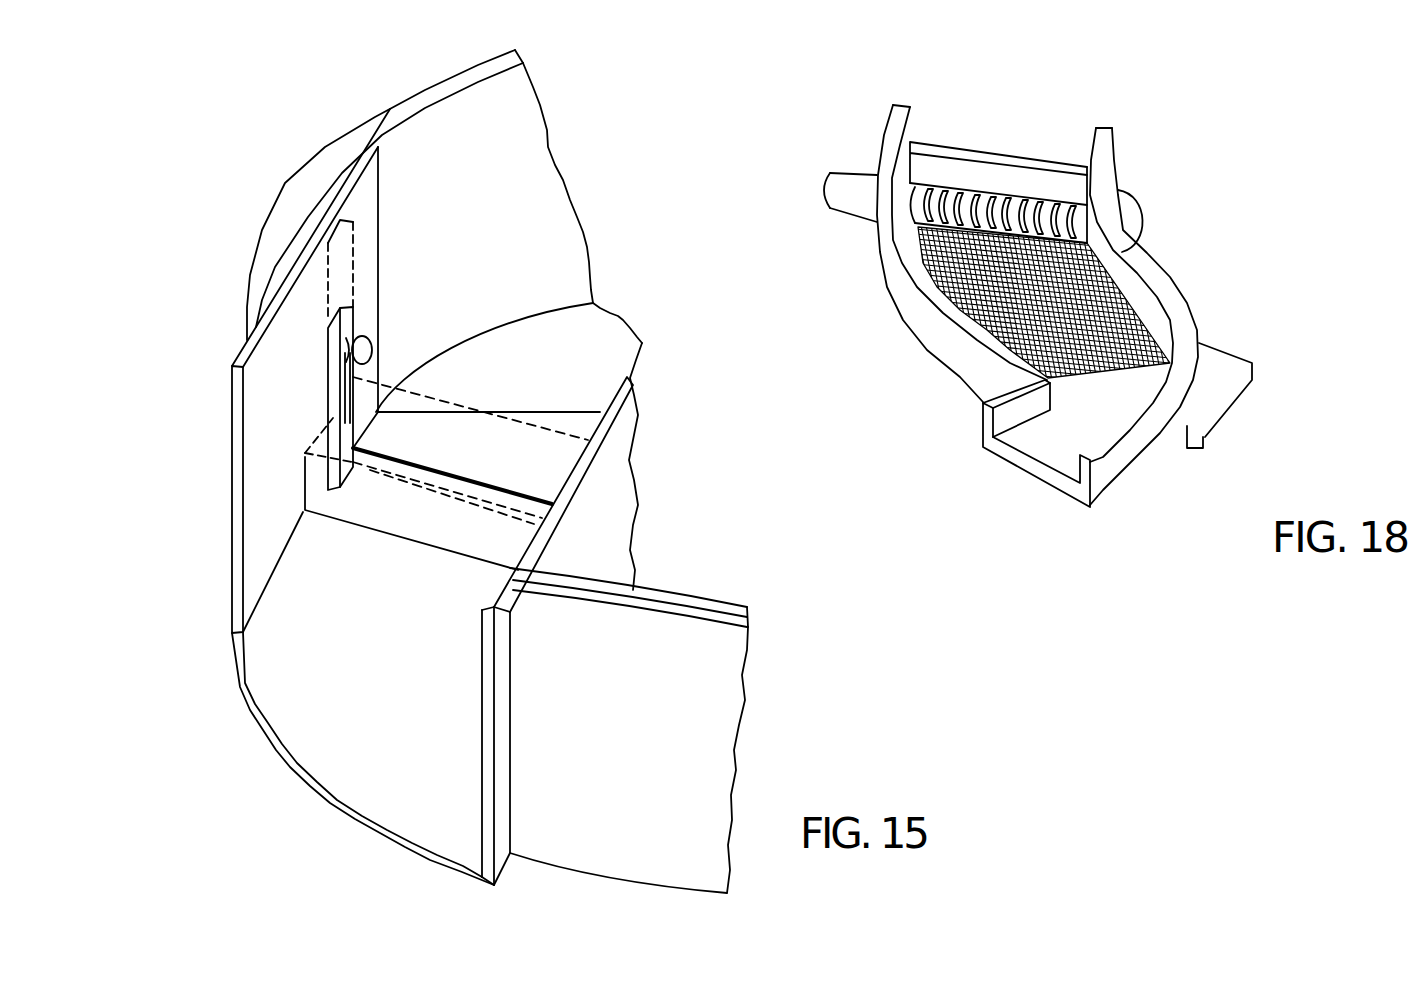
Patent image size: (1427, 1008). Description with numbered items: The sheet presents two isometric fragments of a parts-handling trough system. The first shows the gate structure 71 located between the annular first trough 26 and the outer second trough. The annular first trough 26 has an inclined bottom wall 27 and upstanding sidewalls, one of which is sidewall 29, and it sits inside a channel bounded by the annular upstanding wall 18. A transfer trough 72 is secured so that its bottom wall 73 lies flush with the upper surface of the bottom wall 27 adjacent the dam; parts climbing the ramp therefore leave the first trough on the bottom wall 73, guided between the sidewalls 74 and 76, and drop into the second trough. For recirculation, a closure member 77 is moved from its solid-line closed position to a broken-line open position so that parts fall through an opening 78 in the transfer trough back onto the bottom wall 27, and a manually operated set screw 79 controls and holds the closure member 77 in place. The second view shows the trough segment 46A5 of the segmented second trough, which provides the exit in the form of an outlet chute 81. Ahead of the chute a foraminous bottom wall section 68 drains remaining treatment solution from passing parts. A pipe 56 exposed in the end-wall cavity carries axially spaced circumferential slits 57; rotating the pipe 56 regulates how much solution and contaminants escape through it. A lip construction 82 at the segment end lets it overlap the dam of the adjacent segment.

In FIG. 15, the annular upstanding wall 18 is at (332, 148).
In FIG. 15, the sidewall 29 is at (533, 125).
In FIG. 15, the annular first trough 26 is at (557, 268).
In FIG. 15, the bottom wall 27 is at (513, 347).
In FIG. 15, the gate structure 71 is at (230, 314).
In FIG. 15, the transfer trough 72 is at (280, 757).
In FIG. 15, the bottom wall 73 is at (293, 675).
In FIG. 15, the sidewall 74 is at (257, 530).
In FIG. 15, the sidewall 76 is at (480, 766).
In FIG. 15, the closure member 77 is at (343, 517).
In FIG. 15, the opening 78 is at (402, 540).
In FIG. 15, the set screw 79 is at (372, 345).
In FIG. 18, the pipe 56 is at (855, 188).
In FIG. 18, the slits 57 is at (1034, 200).
In FIG. 18, the foraminous bottom wall section 68 is at (913, 248).
In FIG. 18, the trough segment 46A5 is at (926, 364).
In FIG. 18, the outlet chute 81 is at (1048, 447).
In FIG. 18, the lip construction 82 is at (1226, 402).